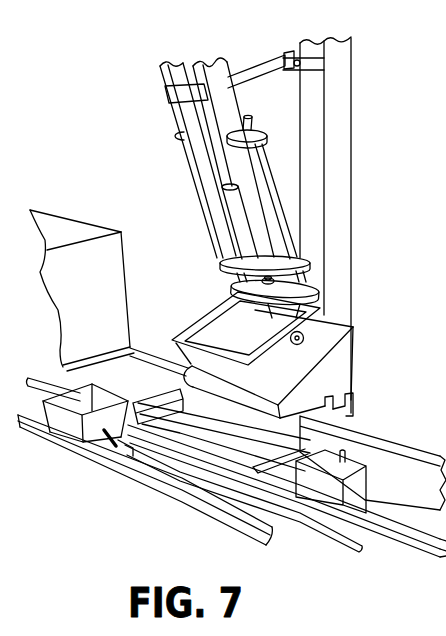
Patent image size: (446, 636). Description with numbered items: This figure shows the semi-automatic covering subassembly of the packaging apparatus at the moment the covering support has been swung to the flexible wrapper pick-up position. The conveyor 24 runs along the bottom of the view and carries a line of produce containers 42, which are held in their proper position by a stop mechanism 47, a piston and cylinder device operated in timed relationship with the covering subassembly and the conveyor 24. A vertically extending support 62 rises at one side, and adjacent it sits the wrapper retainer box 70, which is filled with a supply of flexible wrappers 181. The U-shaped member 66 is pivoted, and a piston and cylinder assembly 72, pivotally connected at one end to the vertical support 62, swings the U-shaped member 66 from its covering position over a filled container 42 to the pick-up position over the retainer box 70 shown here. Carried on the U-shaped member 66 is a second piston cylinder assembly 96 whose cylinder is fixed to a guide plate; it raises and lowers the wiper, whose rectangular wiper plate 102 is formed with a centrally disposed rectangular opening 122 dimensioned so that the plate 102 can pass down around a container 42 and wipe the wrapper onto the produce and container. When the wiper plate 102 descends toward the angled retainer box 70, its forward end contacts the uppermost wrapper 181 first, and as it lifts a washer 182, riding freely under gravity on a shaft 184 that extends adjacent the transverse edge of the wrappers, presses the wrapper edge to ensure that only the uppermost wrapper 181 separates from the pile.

The conveyor 24 is at (182, 473).
The produce container 42 is at (70, 427).
The stop mechanism 47 is at (114, 447).
The vertically extending support 62 is at (343, 133).
The U-shaped member 66 is at (218, 72).
The wrapper retainer box 70 is at (352, 343).
The piston and cylinder assembly 72 is at (266, 86).
The piston cylinder assembly 96 is at (227, 212).
The rectangular wiper plate 102 is at (312, 310).
The rectangular opening 122 is at (220, 325).
The flexible wrapper 181 is at (279, 389).
The washer 182 is at (304, 334).
The shaft 184 is at (303, 340).